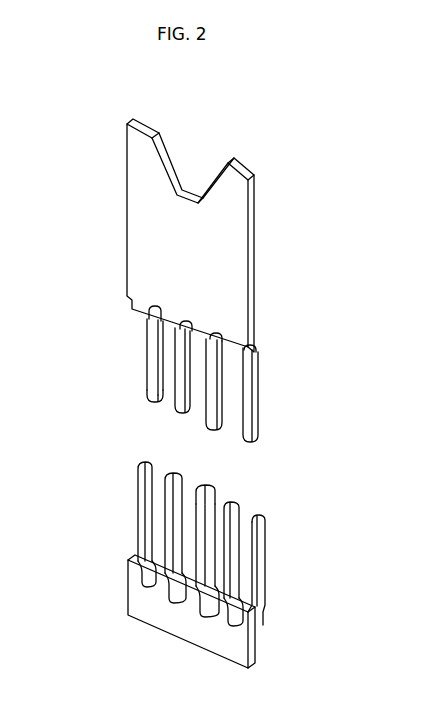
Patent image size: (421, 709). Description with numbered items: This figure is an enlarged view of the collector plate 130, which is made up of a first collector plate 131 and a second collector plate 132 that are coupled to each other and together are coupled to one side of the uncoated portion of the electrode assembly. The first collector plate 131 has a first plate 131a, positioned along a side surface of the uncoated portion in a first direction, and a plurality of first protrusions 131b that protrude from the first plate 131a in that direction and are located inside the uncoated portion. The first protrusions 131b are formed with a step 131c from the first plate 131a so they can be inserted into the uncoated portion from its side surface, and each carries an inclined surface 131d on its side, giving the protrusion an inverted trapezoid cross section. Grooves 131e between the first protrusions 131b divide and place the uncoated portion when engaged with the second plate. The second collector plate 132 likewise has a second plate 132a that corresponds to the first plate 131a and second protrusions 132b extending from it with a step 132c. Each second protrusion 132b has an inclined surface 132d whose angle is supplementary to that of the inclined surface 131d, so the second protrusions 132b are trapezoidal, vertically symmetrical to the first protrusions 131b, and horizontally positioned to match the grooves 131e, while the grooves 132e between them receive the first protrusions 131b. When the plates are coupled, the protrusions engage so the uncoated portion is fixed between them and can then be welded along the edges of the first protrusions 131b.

The collector plate 130 is at (299, 146).
The first collector plate 131 is at (99, 166).
The first plate 131a is at (137, 218).
The first protrusions 131b is at (150, 355).
The step 131c is at (132, 318).
The inclined surface 131d is at (253, 393).
The grooves 131e is at (166, 403).
The second collector plate 132 is at (91, 616).
The second plate 132a is at (180, 623).
The second protrusions 132b is at (137, 512).
The step 132c is at (130, 560).
The inclined surface 132d is at (258, 512).
The grooves 132e is at (221, 499).